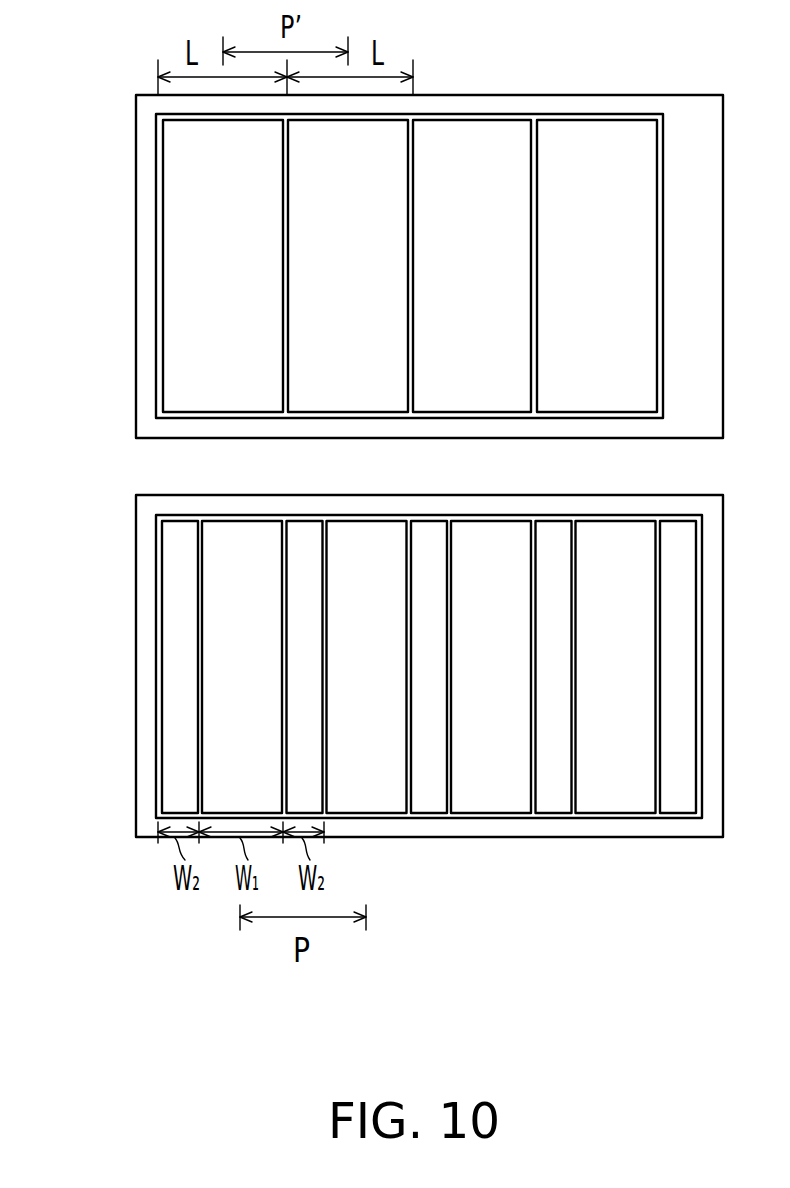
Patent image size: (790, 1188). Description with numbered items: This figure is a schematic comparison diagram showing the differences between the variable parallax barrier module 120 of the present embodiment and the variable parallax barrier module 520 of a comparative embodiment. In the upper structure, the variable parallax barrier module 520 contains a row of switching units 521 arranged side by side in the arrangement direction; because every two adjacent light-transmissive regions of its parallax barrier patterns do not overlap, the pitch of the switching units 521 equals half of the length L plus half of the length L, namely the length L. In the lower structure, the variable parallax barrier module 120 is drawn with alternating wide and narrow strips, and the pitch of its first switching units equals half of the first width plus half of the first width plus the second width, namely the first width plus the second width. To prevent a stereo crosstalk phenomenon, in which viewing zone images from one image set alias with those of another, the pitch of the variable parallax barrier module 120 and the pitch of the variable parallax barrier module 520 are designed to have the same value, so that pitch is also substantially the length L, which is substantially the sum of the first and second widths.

The variable parallax barrier module 520 is at (149, 343).
The switching units 521 is at (313, 200).
The variable parallax barrier module 120 is at (145, 697).